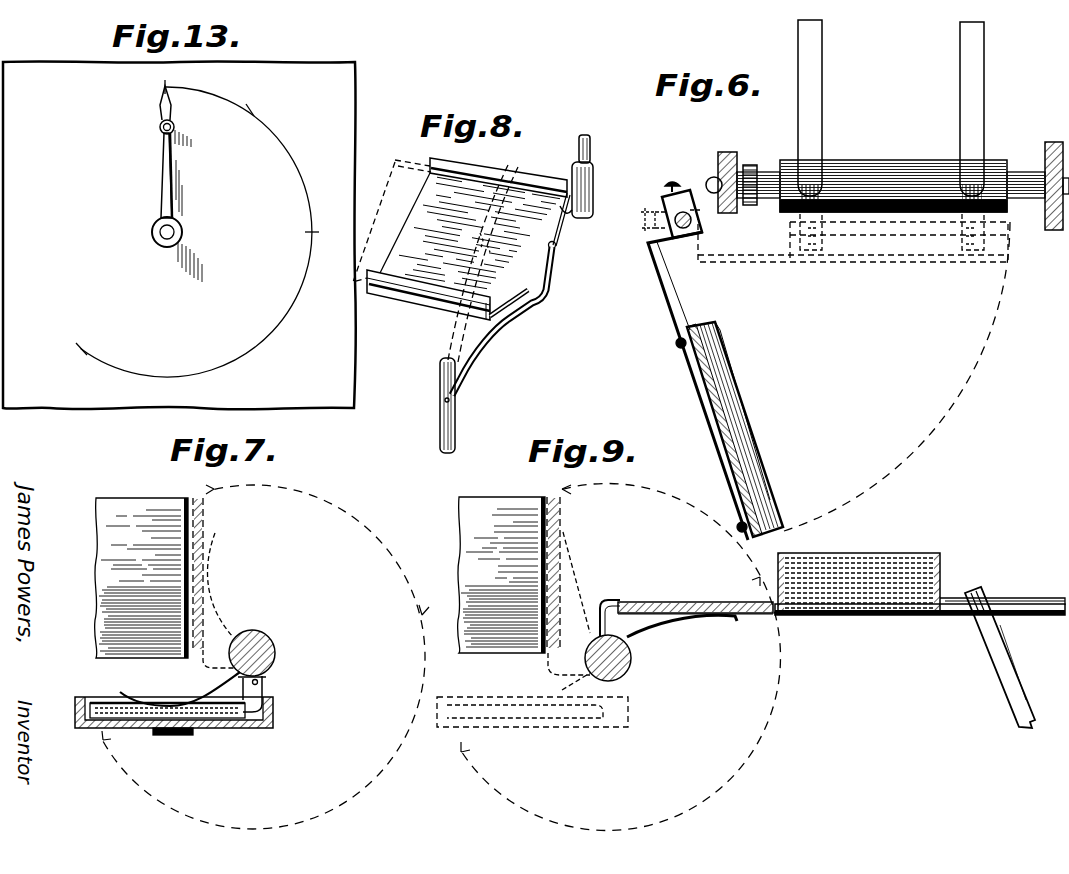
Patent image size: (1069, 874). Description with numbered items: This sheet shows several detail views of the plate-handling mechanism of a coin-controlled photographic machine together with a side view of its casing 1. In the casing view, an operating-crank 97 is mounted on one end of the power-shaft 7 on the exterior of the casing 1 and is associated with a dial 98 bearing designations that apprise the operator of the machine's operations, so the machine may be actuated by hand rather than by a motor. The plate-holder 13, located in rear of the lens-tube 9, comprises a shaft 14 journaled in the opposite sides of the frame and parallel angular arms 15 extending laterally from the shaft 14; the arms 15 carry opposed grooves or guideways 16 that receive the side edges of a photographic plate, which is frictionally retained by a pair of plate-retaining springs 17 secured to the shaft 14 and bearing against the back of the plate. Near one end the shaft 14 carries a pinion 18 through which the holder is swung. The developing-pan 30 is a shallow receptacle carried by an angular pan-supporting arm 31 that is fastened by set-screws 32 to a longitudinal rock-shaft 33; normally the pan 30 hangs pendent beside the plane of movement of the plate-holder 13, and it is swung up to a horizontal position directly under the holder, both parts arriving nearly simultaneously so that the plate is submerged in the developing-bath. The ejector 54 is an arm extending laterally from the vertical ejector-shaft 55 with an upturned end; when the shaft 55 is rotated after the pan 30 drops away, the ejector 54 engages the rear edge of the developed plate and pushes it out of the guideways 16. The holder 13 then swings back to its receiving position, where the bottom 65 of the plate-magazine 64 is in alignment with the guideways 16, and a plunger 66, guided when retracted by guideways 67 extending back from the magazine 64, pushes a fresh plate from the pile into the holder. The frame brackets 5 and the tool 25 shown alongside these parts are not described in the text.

In FIG. 13, the casing 1 is at (179, 235).
In FIG. 6, the frame brackets 5 is at (727, 151).
In FIG. 13, the power-shaft 7 is at (164, 238).
In FIG. 7, the lens-tube 9 is at (138, 497).
In FIG. 9, the lens-tube 9 is at (501, 564).
In FIG. 8, the plate-holder 13 is at (486, 170).
In FIG. 6, the plate-holder 13 is at (823, 60).
In FIG. 7, the plate-holder 13 is at (205, 517).
In FIG. 9, the plate-holder 13 is at (561, 513).
In FIG. 6, the shaft 14 is at (897, 165).
In FIG. 7, the shaft 14 is at (264, 643).
In FIG. 9, the shaft 14 is at (632, 668).
In FIG. 8, the angular arms 15 is at (590, 180).
In FIG. 9, the angular arms 15 is at (598, 612).
In FIG. 8, the grooves or guideways 16 is at (513, 181).
In FIG. 9, the grooves or guideways 16 is at (678, 602).
In FIG. 7, the plate-retaining springs 17 is at (213, 604).
In FIG. 9, the plate-retaining springs 17 is at (570, 578).
In FIG. 6, the pinion 18 is at (750, 164).
In FIG. 9, the tool 25 is at (997, 664).
In FIG. 6, the developing-pan 30 is at (833, 263).
In FIG. 7, the developing-pan 30 is at (127, 729).
In FIG. 9, the developing-pan 30 is at (578, 727).
In FIG. 6, the pan-supporting arm 31 is at (737, 260).
In FIG. 7, the pan-supporting arm 31 is at (175, 736).
In FIG. 6, the set-screws 32 is at (672, 176).
In FIG. 6, the rock-shaft 33 is at (684, 232).
In FIG. 8, the ejector 54 is at (503, 238).
In FIG. 8, the ejector-shaft 55 is at (455, 402).
In FIG. 9, the plate-magazine 64 is at (942, 562).
In FIG. 9, the bottom 65 is at (858, 613).
In FIG. 9, the plunger 66 is at (803, 616).
In FIG. 9, the guideways 67 is at (1035, 598).
In FIG. 13, the operating-crank 97 is at (160, 131).
In FIG. 13, the dial 98 is at (289, 150).